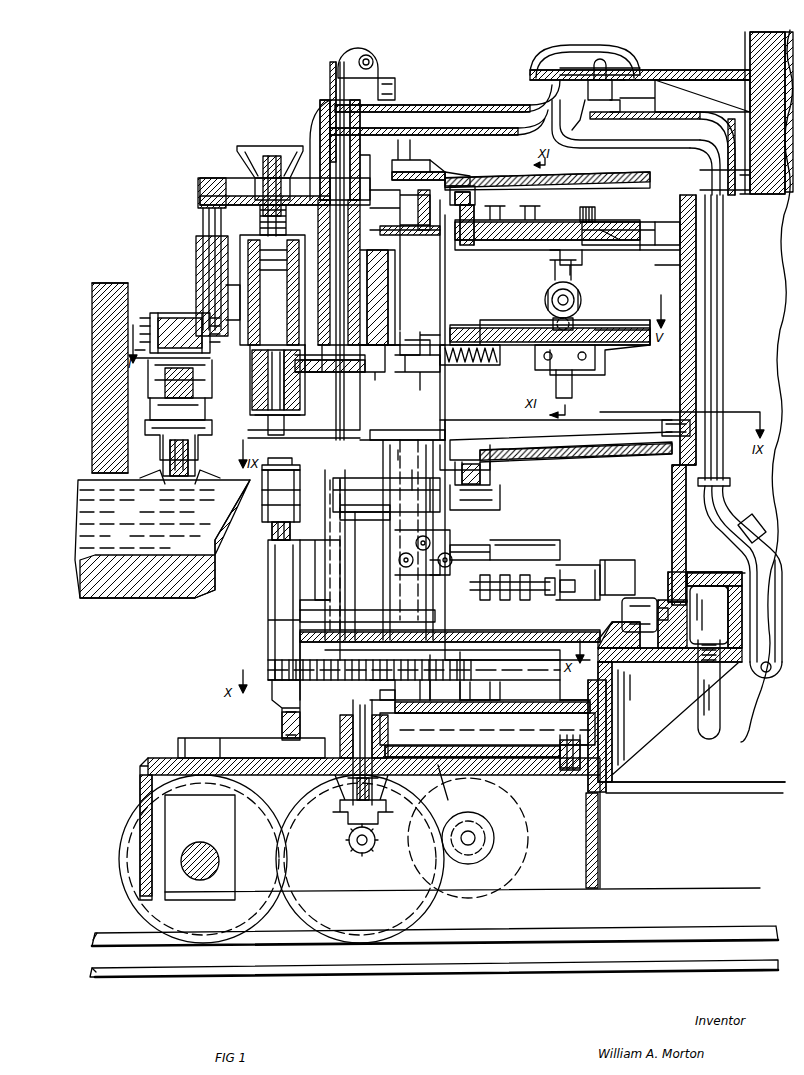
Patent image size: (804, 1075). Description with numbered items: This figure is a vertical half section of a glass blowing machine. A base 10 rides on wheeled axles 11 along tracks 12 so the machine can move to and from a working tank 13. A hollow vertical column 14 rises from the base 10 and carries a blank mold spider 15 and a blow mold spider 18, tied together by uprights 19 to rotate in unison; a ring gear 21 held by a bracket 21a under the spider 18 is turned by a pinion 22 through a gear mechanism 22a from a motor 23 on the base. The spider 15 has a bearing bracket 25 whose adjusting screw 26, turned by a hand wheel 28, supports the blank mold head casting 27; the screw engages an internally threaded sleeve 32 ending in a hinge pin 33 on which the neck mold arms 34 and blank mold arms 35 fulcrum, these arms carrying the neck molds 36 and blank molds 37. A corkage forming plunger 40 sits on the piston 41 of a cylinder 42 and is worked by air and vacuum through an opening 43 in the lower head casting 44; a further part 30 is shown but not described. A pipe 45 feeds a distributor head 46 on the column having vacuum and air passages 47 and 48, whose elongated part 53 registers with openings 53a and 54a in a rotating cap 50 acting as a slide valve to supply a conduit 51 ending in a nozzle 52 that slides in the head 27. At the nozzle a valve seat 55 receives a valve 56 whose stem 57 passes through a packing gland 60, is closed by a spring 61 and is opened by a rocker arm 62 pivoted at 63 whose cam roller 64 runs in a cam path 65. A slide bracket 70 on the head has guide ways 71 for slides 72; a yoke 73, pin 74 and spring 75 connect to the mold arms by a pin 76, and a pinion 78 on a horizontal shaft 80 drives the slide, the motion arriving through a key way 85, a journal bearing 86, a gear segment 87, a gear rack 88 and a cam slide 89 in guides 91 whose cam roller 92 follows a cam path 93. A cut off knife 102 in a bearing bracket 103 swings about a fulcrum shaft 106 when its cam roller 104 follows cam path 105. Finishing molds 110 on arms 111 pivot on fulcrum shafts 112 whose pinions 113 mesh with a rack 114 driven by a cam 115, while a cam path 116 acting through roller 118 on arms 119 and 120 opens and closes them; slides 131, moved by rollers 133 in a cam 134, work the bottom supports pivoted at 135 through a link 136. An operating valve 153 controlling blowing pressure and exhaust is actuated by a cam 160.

The base 10 is at (145, 766).
The wheeled axles 11 is at (195, 855).
The tracks 12 is at (528, 952).
The working tank 13 is at (115, 600).
The hollow vertical column 14 is at (672, 480).
The blank mold spider 15 is at (670, 265).
The blow mold spider 18 is at (300, 618).
The uprights 19 is at (395, 560).
The ring gear 21 is at (465, 740).
The bracket 21a is at (388, 697).
The pinion 22 is at (340, 728).
The interconnected gear mechanism 22a is at (420, 905).
The motor 23 is at (490, 860).
The bearing bracket 25 is at (237, 188).
The adjusting screw 26 is at (262, 216).
The blank mold head casting 27 is at (240, 264).
The hand wheel 28 is at (248, 148).
The column 30 is at (205, 232).
The internally screw-threaded sleeve 32 is at (238, 292).
The hinge pin 33 is at (276, 418).
The neck mold arms 34 is at (305, 405).
The blank mold arms 35 is at (230, 420).
The neck molds 36 is at (150, 402).
The blank molds 37 is at (163, 450).
The corkage forming plunger 40 is at (145, 426).
The piston 41 is at (165, 378).
The cylinder 42 is at (150, 330).
The opening 43 is at (310, 375).
The lower head casting 44 is at (338, 375).
The pipe 45 is at (732, 355).
The distributor head 46 is at (680, 140).
The passage 47 is at (582, 128).
The passage 48 is at (652, 100).
The distributor cap 50 is at (628, 70).
The conduit 51 is at (456, 115).
The sleeve or nozzle 52 is at (375, 210).
The elongated part 53 is at (583, 68).
The opening 53a is at (603, 63).
The opening 54a is at (643, 70).
The valve seat 55 is at (430, 296).
The valve 56 is at (372, 376).
The stem 57 is at (320, 138).
The packing gland 60 is at (330, 96).
The spring 61 is at (330, 78).
The rocker arm 62 is at (395, 80).
The pivot 63 is at (373, 63).
The cam roller 64 is at (425, 160).
The cam path 65 is at (465, 168).
The slide bracket 70 is at (455, 305).
The guide ways 71 is at (632, 344).
The slides 72 is at (595, 350).
The yoke 73 is at (425, 380).
The pin 74 is at (453, 325).
The spring 75 is at (487, 364).
The pin 76 is at (415, 348).
The pinion 78 is at (580, 305).
The horizontal shaft 80 is at (548, 288).
The key way 85 is at (574, 393).
The journal bearing 86 is at (582, 260).
The gear segment 87 is at (596, 212).
The gear rack 88 is at (525, 210).
The cam slide 89 is at (632, 220).
The guides 91 is at (650, 242).
The cam roller 92 is at (470, 178).
The cam path 93 is at (475, 198).
The cut off knife 102 is at (300, 468).
The bearing bracket 103 is at (325, 578).
The cam roller 104 is at (280, 732).
The cam path 105 is at (200, 736).
The fulcrum shaft 106 is at (272, 532).
The finishing molds 110 is at (395, 450).
The arms 111 is at (315, 508).
The vertical fulcrum shafts 112 is at (323, 543).
The pinions 113 is at (370, 686).
The rack 114 is at (265, 660).
The cam 115 is at (500, 668).
The cam path 116 is at (490, 420).
The roller 118 is at (492, 466).
The arm 119 is at (500, 490).
The arm 120 is at (398, 485).
The slides 131 is at (456, 560).
The rollers 133 is at (538, 538).
The cam 134 is at (578, 538).
The pivot 135 is at (470, 588).
The link 136 is at (450, 578).
The operating valve 153 is at (552, 566).
The cam 160 is at (598, 568).